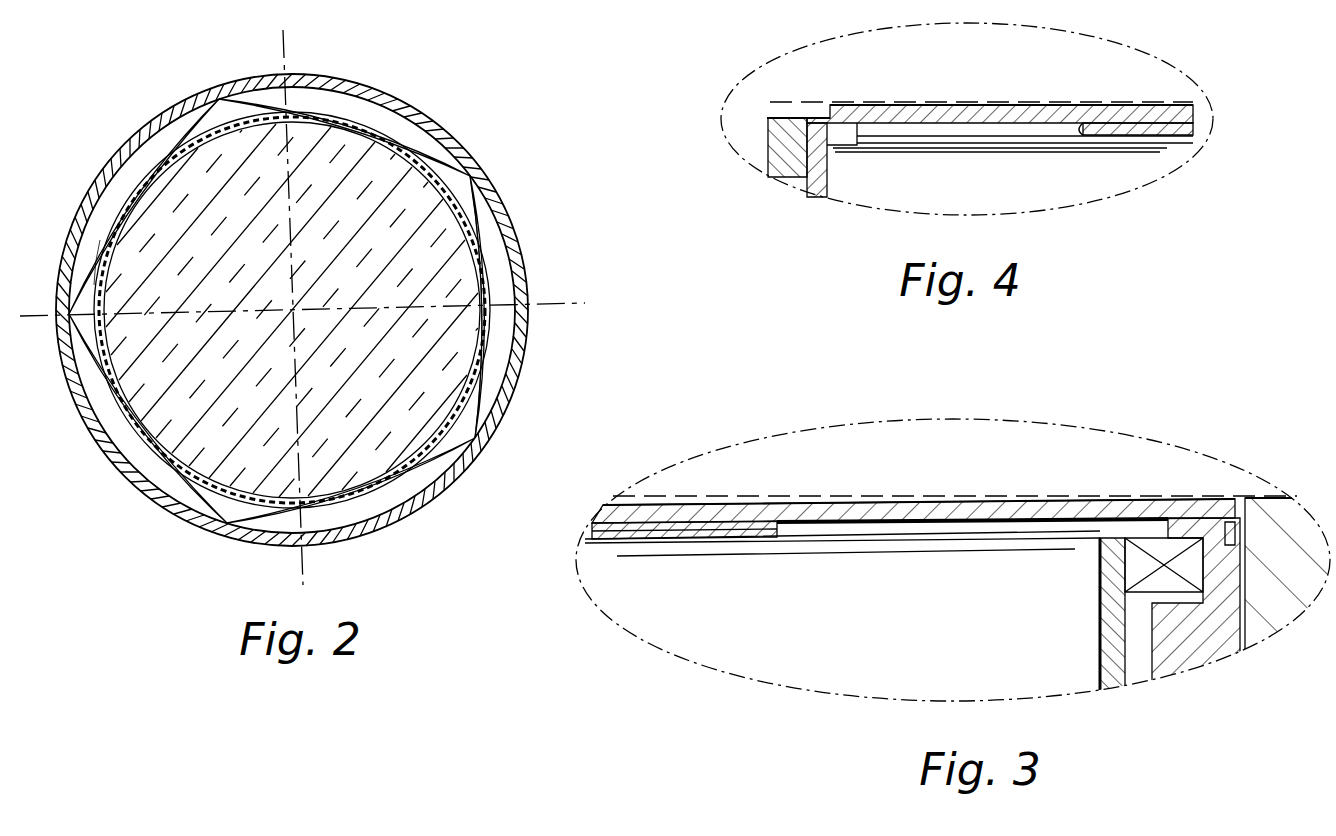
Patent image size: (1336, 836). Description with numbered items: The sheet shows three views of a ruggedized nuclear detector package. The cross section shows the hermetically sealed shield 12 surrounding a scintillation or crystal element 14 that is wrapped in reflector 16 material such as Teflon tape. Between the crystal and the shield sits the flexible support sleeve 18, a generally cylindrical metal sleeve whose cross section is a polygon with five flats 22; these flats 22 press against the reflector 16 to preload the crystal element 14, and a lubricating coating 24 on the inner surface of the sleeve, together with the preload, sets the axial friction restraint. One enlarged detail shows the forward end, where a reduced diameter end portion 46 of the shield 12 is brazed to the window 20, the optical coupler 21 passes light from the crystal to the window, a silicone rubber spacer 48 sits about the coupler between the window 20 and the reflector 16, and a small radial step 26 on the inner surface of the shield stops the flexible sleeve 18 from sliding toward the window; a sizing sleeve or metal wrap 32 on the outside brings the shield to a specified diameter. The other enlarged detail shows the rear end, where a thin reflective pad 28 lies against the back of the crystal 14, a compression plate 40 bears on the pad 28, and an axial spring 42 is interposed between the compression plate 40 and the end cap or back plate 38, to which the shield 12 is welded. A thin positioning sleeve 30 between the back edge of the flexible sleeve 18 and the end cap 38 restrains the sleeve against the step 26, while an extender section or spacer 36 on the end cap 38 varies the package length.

In FIG. 2, the shield 12 is at (529, 290).
In FIG. 4, the shield 12 is at (990, 110).
In FIG. 3, the shield 12 is at (928, 510).
In FIG. 2, the scintillation or crystal element 14 is at (352, 371).
In FIG. 4, the scintillation or crystal element 14 is at (1015, 187).
In FIG. 3, the scintillation or crystal element 14 is at (837, 649).
In FIG. 2, the reflector 16 is at (455, 432).
In FIG. 2, the flexible support sleeve 18 is at (486, 400).
In FIG. 4, the flexible support sleeve 18 is at (1128, 125).
In FIG. 3, the flexible support sleeve 18 is at (745, 526).
In FIG. 4, the window 20 is at (785, 158).
In FIG. 4, the optical coupler 21 is at (828, 193).
In FIG. 2, the flats 22 is at (130, 188).
In FIG. 2, the lubricating coating 24 is at (92, 273).
In FIG. 4, the radial step 26 is at (1069, 112).
In FIG. 3, the reflective pad 28 is at (1130, 652).
In FIG. 3, the positioning sleeve 30 is at (962, 530).
In FIG. 4, the sizing sleeve or metal wrap 32 is at (822, 103).
In FIG. 3, the sizing sleeve or metal wrap 32 is at (1040, 500).
In FIG. 3, the extender section or spacer 36 is at (1266, 500).
In FIG. 3, the end cap or back plate 38 is at (1240, 602).
In FIG. 3, the compression plate 40 is at (1108, 622).
In FIG. 3, the axial spring 42 is at (1185, 568).
In FIG. 4, the reduced diameter end portion 46 is at (806, 118).
In FIG. 4, the spacer 48 is at (856, 136).